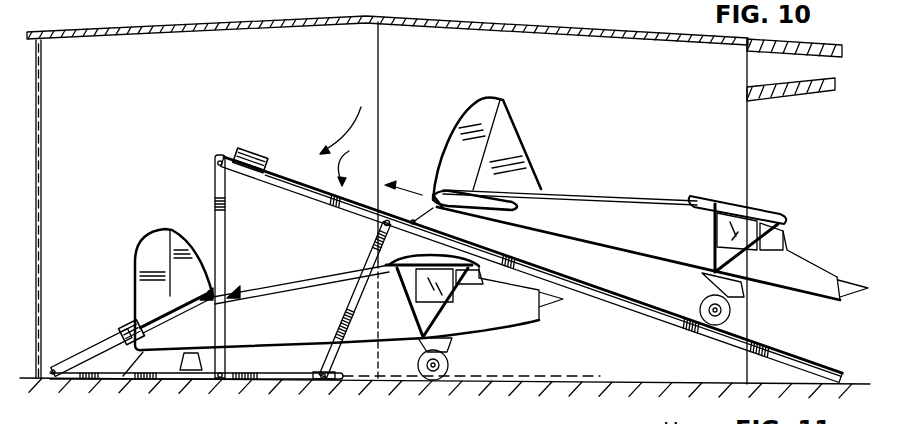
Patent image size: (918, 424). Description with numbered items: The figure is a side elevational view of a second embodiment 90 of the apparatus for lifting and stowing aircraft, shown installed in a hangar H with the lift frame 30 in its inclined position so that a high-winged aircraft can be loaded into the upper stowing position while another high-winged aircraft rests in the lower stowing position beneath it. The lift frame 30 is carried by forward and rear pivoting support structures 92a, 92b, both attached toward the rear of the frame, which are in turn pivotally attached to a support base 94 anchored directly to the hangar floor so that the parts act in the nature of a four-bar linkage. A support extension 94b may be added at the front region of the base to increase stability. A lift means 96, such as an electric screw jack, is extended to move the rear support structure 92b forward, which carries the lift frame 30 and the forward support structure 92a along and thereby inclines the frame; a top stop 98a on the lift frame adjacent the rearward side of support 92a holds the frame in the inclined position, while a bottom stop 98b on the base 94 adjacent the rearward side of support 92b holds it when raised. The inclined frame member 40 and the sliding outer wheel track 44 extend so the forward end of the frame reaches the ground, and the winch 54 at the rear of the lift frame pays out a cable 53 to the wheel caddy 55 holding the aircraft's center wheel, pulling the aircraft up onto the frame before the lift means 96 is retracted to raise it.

The hangar H is at (647, 32).
The lift frame 30 is at (603, 211).
The inclined ramp beam 40 is at (621, 308).
The sliding outer wheel track 44 is at (692, 333).
The extending cable 53 is at (300, 166).
The winch 54 is at (253, 147).
The wheel caddy 55 is at (450, 237).
The apparatus for lifting and stowing aircraft 90 is at (340, 124).
The forward pivoting support structure 92a is at (366, 264).
The rear pivoting support structure 92b is at (213, 198).
The support base 94 is at (287, 374).
The support extension 94b is at (514, 372).
The lift means 96 is at (90, 345).
The top stop 98a is at (375, 229).
The bottom stop 98b is at (182, 366).